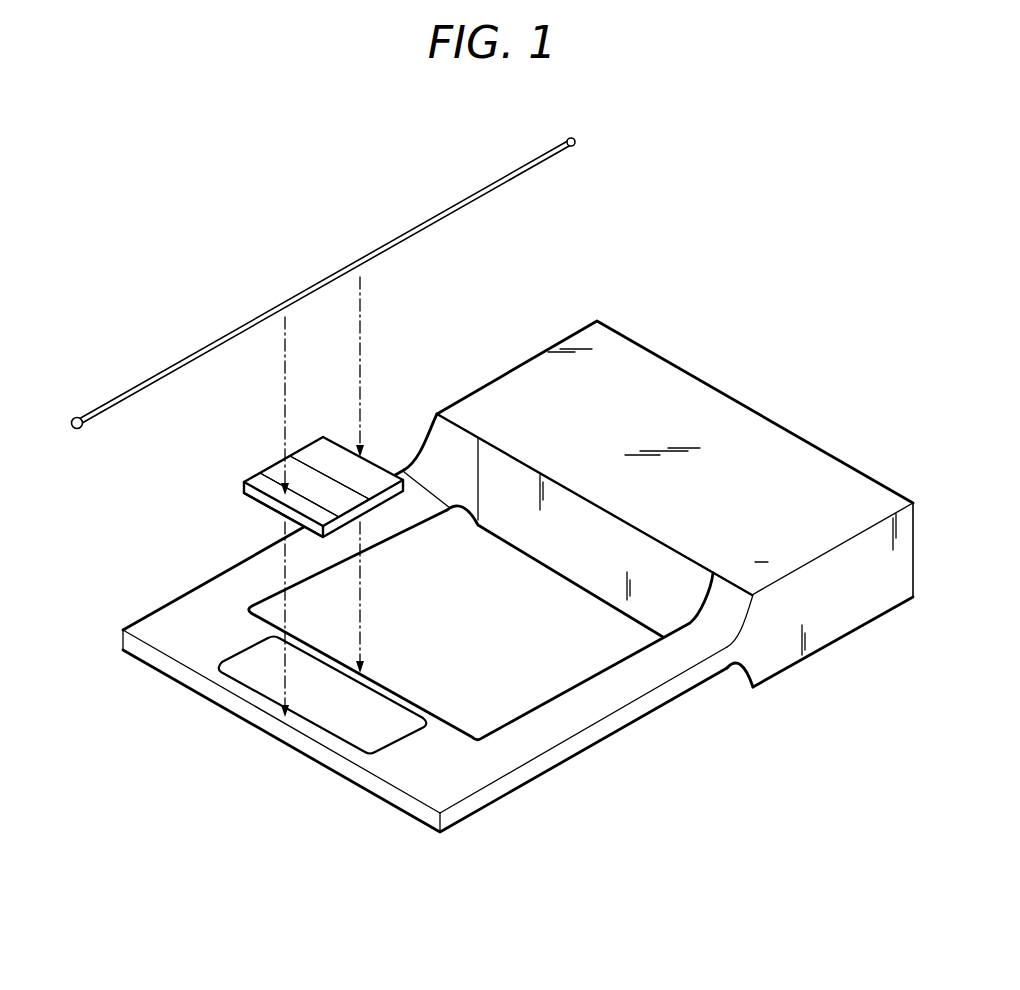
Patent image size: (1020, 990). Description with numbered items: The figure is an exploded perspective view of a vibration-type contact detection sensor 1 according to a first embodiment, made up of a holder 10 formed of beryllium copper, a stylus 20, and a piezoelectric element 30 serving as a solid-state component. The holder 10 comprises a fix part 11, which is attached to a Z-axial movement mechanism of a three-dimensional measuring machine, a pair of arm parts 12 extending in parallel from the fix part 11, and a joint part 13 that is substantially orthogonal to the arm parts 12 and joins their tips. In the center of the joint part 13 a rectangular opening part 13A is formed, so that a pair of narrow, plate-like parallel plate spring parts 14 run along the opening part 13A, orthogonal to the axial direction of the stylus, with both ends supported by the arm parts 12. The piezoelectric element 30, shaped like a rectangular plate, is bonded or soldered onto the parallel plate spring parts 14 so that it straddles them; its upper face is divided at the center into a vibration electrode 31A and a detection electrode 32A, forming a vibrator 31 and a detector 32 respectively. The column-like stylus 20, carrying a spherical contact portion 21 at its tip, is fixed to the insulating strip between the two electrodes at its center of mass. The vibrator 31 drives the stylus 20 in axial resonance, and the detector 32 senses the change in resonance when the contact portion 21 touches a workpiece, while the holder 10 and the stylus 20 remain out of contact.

The vibration-type contact detection sensor 1 is at (705, 333).
The holder 10 is at (843, 498).
The fix part 11 is at (772, 440).
The arm parts 12 is at (413, 470).
The joint part 13 is at (192, 652).
The opening part 13A is at (258, 688).
The parallel plate spring parts 14 is at (330, 742).
The stylus 20 is at (361, 257).
The contact portion 21 is at (73, 417).
The piezoelectric element 30 is at (257, 511).
The vibrator 31 is at (273, 462).
The vibration electrode 31A is at (265, 477).
The detector 32 is at (335, 505).
The detection electrode 32A is at (383, 487).